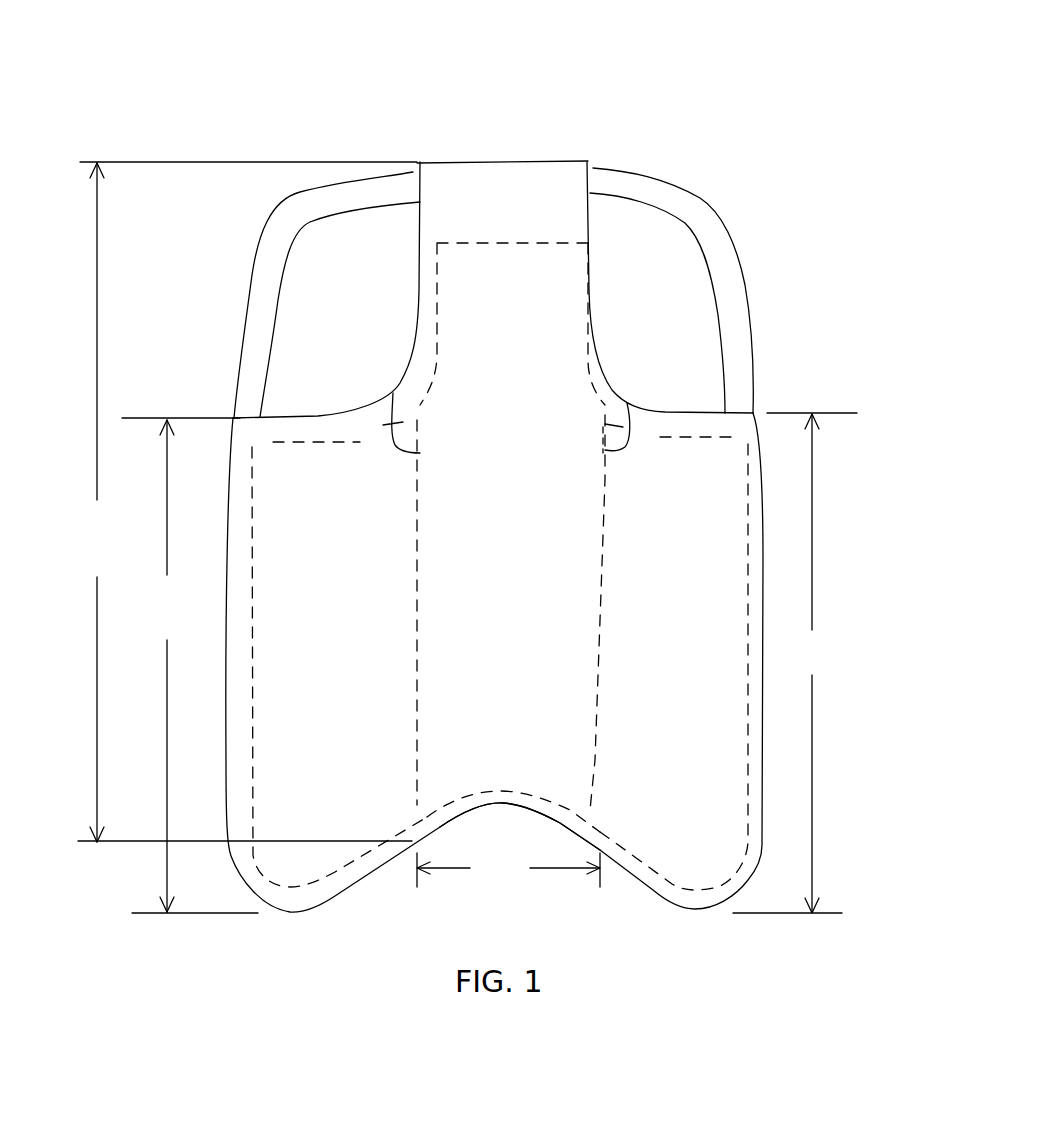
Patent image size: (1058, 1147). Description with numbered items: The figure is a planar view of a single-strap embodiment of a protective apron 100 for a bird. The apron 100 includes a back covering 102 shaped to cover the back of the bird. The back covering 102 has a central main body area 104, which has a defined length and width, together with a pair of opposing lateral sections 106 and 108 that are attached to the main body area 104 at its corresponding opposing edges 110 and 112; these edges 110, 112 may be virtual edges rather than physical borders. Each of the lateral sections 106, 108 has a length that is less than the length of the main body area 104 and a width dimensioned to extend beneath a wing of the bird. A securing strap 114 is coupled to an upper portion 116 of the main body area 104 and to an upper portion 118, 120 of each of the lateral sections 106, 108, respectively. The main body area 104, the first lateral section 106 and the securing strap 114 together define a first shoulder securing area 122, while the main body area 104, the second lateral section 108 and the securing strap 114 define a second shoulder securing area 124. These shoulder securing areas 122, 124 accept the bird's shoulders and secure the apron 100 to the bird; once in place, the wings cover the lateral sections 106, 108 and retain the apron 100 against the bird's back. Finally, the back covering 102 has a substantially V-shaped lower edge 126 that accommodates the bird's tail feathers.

The apron 100 is at (623, 82).
The back covering 102 is at (482, 145).
The main body area 104 is at (532, 577).
The first lateral section 106 is at (348, 587).
The second lateral section 108 is at (696, 587).
The first opposing edge 110 is at (393, 397).
The second opposing edge 112 is at (619, 400).
The securing strap 114 is at (717, 252).
The upper portion of the main body area 116 is at (533, 163).
The upper portion of the first lateral section 118 is at (234, 413).
The upper portion of the second lateral section 120 is at (752, 408).
The first shoulder securing area 122 is at (378, 322).
The second shoulder securing area 124 is at (685, 322).
The V-shaped lower edge 126 is at (563, 822).